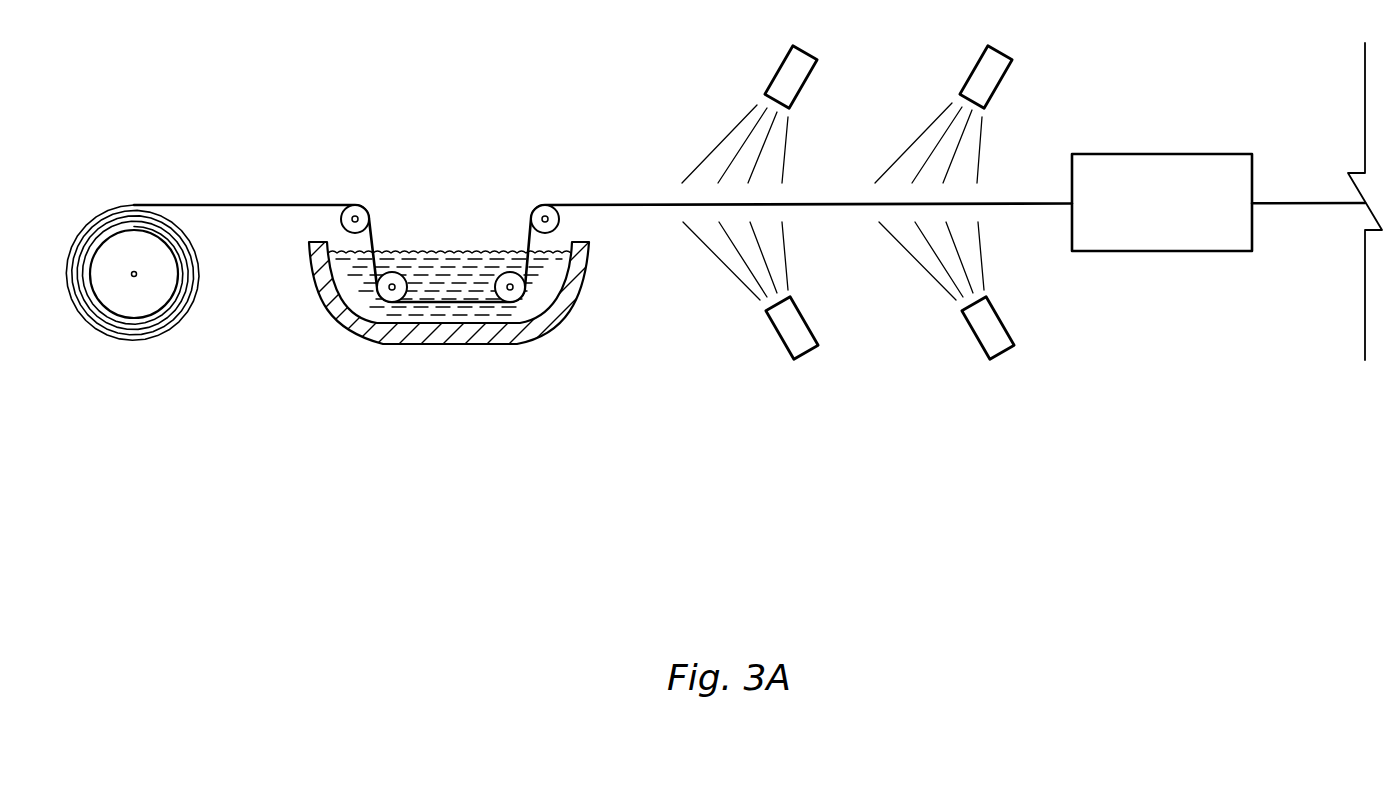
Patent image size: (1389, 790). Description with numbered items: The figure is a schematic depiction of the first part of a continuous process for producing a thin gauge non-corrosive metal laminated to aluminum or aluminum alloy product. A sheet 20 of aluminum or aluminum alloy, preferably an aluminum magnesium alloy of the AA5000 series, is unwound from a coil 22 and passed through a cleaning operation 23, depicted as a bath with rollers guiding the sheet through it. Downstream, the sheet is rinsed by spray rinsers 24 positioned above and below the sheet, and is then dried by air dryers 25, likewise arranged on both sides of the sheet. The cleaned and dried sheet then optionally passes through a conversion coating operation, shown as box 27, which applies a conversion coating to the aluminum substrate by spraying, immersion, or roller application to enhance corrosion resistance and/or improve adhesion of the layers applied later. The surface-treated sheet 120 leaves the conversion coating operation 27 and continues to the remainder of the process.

The sheet of aluminum or aluminum alloy 20 is at (228, 205).
The coil 22 is at (153, 340).
The cleaning operation 23 is at (475, 155).
The spray rinsers 24 is at (788, 53).
The air dryers 25 is at (985, 52).
The conversion coating operation 27 is at (1148, 154).
The sheet 120 is at (1320, 203).